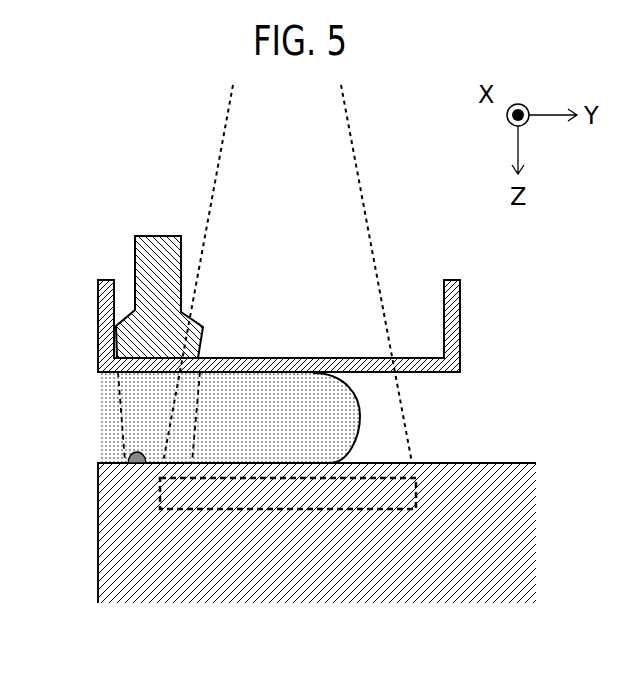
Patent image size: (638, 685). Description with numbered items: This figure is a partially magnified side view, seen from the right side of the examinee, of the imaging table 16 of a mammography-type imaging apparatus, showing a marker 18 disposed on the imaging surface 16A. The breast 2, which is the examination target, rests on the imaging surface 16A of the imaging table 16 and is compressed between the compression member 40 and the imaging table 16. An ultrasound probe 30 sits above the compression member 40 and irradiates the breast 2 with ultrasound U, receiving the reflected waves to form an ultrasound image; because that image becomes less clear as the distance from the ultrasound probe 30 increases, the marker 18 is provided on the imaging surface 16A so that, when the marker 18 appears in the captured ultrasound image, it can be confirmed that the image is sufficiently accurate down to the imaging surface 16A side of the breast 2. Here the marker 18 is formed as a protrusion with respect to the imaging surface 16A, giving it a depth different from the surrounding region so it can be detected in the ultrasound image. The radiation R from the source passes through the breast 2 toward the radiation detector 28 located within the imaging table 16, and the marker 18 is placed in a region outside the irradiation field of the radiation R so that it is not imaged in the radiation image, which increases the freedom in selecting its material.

The breast 2 is at (360, 432).
The ultrasound U is at (115, 392).
The imaging table 16 is at (98, 580).
The imaging surface 16A is at (108, 462).
The marker 18 is at (133, 452).
The radiation detector 28 is at (158, 491).
The ultrasound probe 30 is at (135, 252).
The compression member 40 is at (460, 325).
The radiation R is at (228, 113).